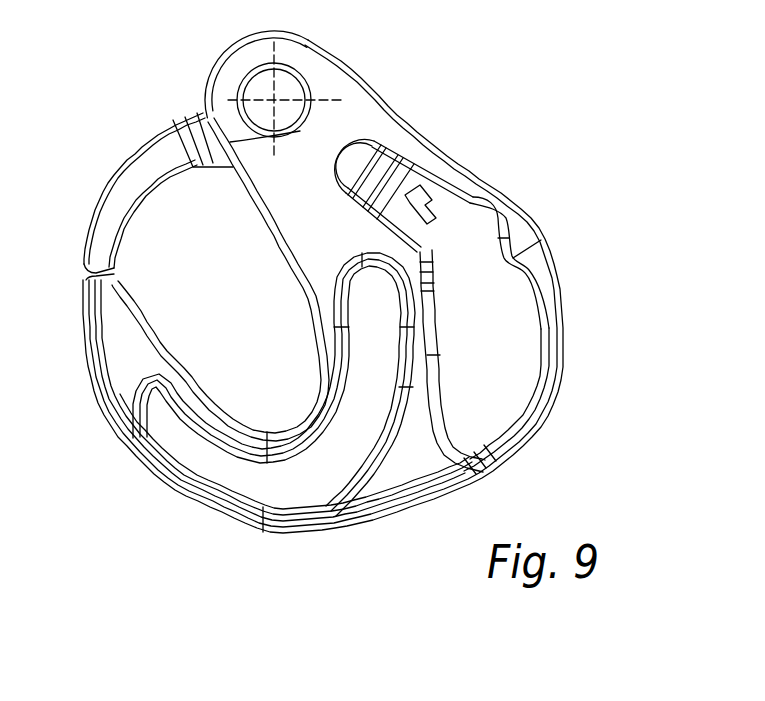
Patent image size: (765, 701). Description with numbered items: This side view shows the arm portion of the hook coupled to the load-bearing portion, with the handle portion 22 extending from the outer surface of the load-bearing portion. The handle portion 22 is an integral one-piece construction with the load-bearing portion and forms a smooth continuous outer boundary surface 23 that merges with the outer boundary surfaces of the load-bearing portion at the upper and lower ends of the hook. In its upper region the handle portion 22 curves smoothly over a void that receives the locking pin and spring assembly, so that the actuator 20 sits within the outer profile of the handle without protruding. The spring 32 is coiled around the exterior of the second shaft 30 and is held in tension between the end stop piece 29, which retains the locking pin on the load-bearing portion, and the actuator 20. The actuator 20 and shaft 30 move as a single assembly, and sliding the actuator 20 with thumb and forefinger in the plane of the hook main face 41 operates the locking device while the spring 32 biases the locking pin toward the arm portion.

The actuator 20 is at (392, 155).
The handle portion 22 is at (557, 320).
The outer boundary surface 23 is at (557, 283).
The end stop piece 29 is at (447, 219).
The second shaft 30 is at (474, 198).
The spring 32 is at (430, 187).
The hook main face 41 is at (259, 115).